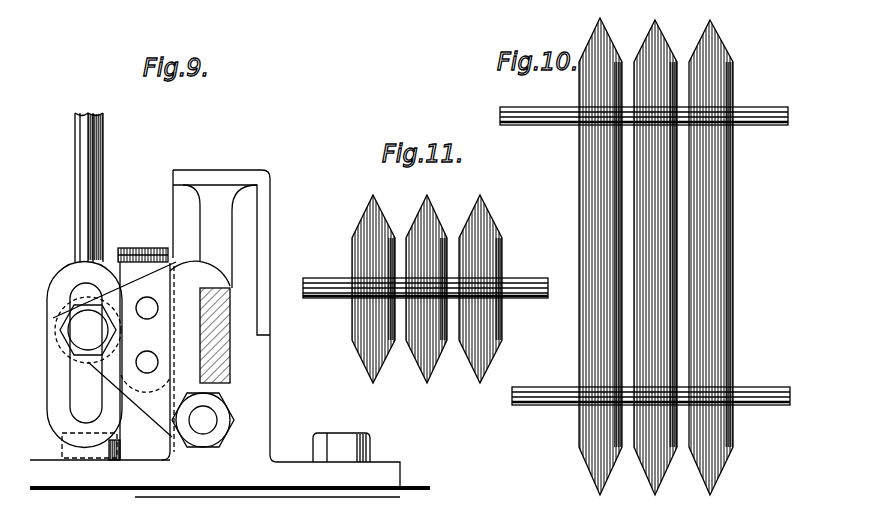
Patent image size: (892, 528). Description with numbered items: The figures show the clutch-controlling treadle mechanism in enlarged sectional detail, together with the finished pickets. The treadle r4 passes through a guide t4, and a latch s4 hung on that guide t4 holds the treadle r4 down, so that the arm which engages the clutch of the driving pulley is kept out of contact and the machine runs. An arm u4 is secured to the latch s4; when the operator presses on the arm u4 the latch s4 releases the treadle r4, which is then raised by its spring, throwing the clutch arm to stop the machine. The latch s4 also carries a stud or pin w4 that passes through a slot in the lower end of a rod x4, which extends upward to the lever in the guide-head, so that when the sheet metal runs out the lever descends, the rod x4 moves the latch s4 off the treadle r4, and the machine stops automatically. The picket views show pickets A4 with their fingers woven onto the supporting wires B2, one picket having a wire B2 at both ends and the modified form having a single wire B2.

In FIG. 9, the rod x4 is at (76, 180).
In FIG. 9, the arm u4 is at (143, 245).
In FIG. 9, the stud or pin w4 is at (88, 330).
In FIG. 9, the latch s4 is at (141, 360).
In FIG. 9, the treadle r4 is at (231, 332).
In FIG. 9, the guide t4 is at (210, 424).
In FIG. 11, the pickets A4 is at (427, 289).
In FIG. 10, the pickets A4 is at (656, 256).
In FIG. 10, the wire B2 is at (765, 108).